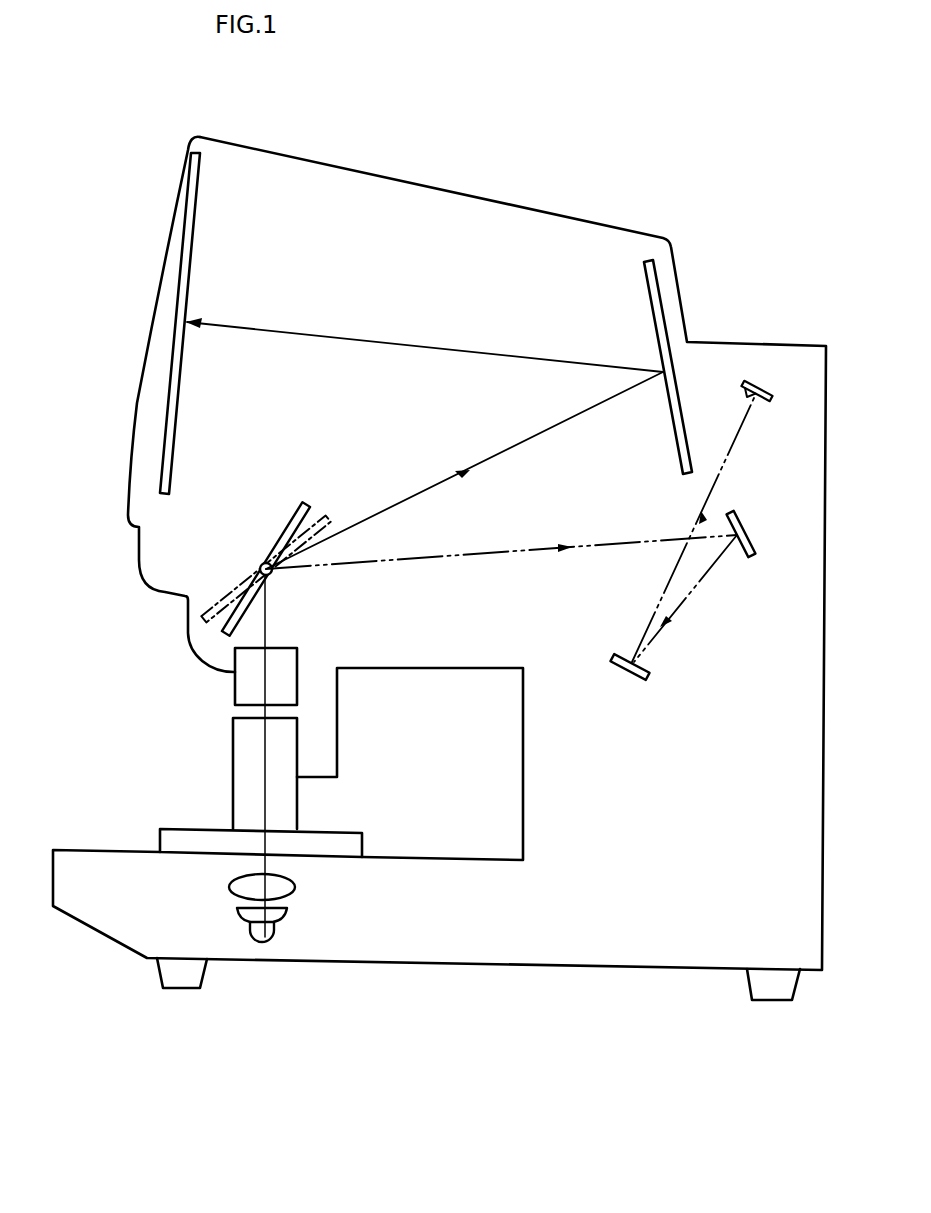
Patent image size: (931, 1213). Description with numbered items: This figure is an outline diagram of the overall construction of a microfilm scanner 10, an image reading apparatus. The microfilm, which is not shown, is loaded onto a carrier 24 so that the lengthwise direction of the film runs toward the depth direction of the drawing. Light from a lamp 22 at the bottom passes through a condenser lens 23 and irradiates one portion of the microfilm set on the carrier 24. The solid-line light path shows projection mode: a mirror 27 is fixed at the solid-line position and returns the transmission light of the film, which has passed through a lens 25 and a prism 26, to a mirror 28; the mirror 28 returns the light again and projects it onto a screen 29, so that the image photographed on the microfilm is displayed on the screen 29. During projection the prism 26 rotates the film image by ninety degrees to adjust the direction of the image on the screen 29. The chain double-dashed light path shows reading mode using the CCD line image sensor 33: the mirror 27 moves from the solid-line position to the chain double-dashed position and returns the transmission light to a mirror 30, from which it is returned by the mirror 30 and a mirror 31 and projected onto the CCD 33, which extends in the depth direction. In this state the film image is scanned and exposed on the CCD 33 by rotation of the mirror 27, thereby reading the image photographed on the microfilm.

The microfilm scanner 10 is at (722, 356).
The lamp 22 is at (264, 940).
The condenser lens 23 is at (290, 886).
The carrier 24 is at (200, 833).
The lens 25 is at (242, 758).
The prism 26 is at (235, 688).
The mirror 27 is at (288, 525).
The mirror 28 is at (660, 283).
The screen 29 is at (186, 204).
The mirror 30 is at (748, 533).
The mirror 31 is at (618, 668).
The CCD line image sensor 33 is at (766, 392).